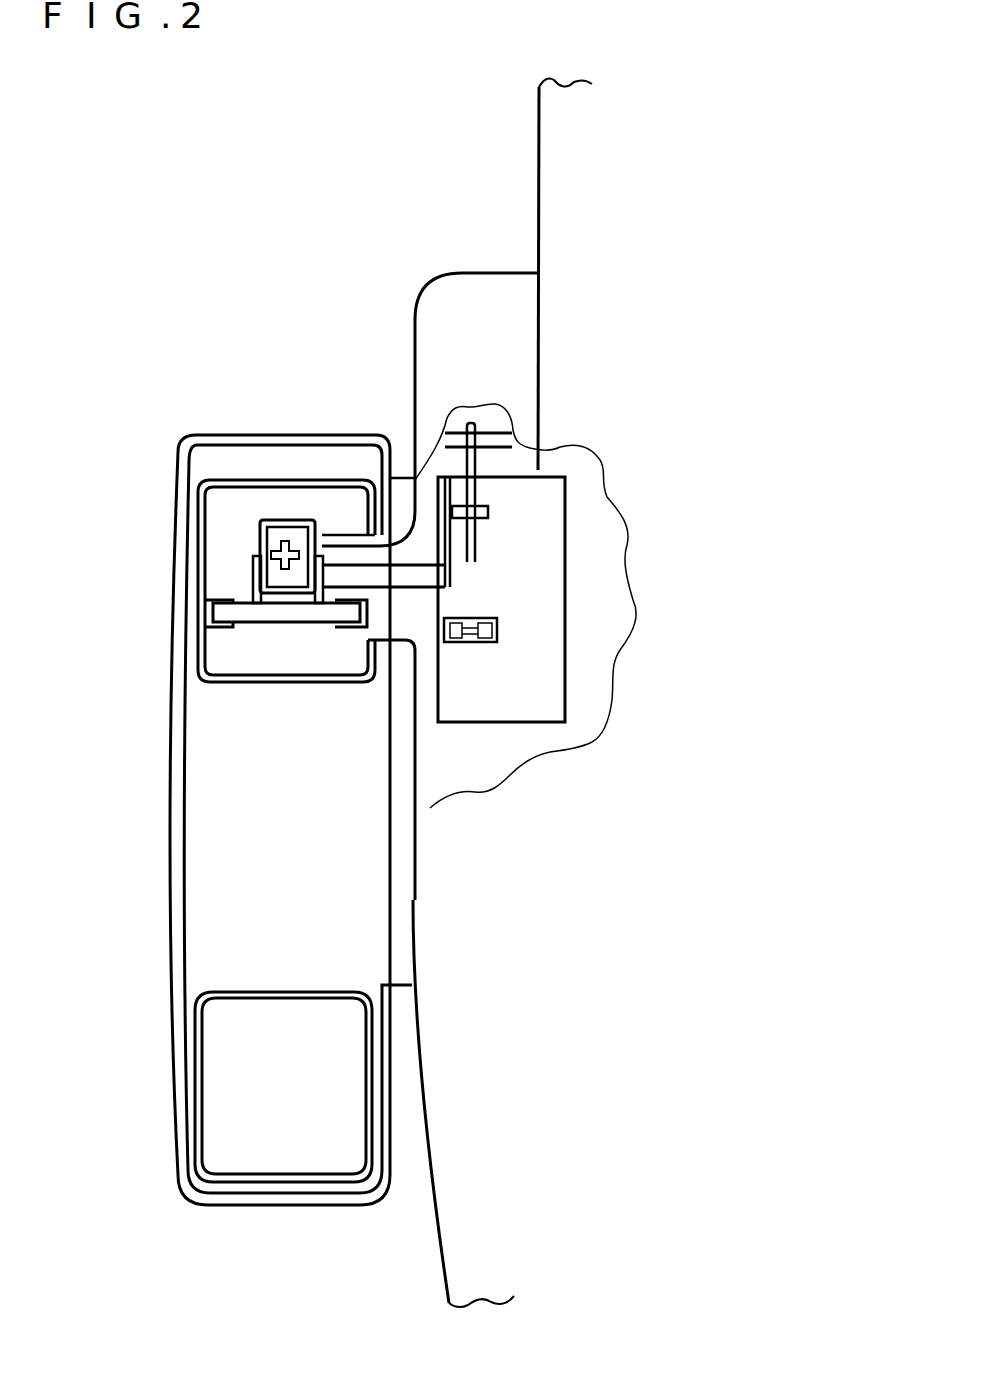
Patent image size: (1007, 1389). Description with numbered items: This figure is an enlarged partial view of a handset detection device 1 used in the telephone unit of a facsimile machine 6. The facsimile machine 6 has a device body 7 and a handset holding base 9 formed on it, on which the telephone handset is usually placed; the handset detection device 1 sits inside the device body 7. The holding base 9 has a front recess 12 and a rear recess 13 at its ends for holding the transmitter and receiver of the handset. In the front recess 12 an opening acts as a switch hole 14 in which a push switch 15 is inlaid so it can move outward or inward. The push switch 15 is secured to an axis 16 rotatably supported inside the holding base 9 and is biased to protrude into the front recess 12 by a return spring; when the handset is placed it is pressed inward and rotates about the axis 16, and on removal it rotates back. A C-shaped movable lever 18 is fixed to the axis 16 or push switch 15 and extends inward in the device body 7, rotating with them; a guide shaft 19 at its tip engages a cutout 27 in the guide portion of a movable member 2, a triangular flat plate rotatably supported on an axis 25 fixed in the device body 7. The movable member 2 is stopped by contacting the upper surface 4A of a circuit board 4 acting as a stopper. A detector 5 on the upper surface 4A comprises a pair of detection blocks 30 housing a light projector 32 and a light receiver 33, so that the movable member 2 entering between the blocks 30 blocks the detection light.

The handset detection device 1 is at (440, 160).
The movable member 2 is at (509, 498).
The circuit board 4 is at (466, 424).
The upper surface of the circuit board 4A is at (547, 655).
The detector 5 is at (463, 610).
The facsimile machine 6 is at (767, 507).
The device body 7 is at (656, 388).
The handset holding base 9 is at (178, 864).
The front recess 12 is at (207, 517).
The rear recess 13 is at (205, 1102).
The switch hole 14 is at (279, 530).
The push switch 15 is at (250, 577).
The axis 16 is at (284, 610).
The movable lever 18 is at (432, 578).
The guide shaft 19 is at (488, 514).
The axis 25 is at (512, 440).
The cutout 27 is at (472, 488).
The detection blocks 30 is at (498, 626).
The light projector 32 is at (457, 642).
The light receiver 33 is at (463, 645).